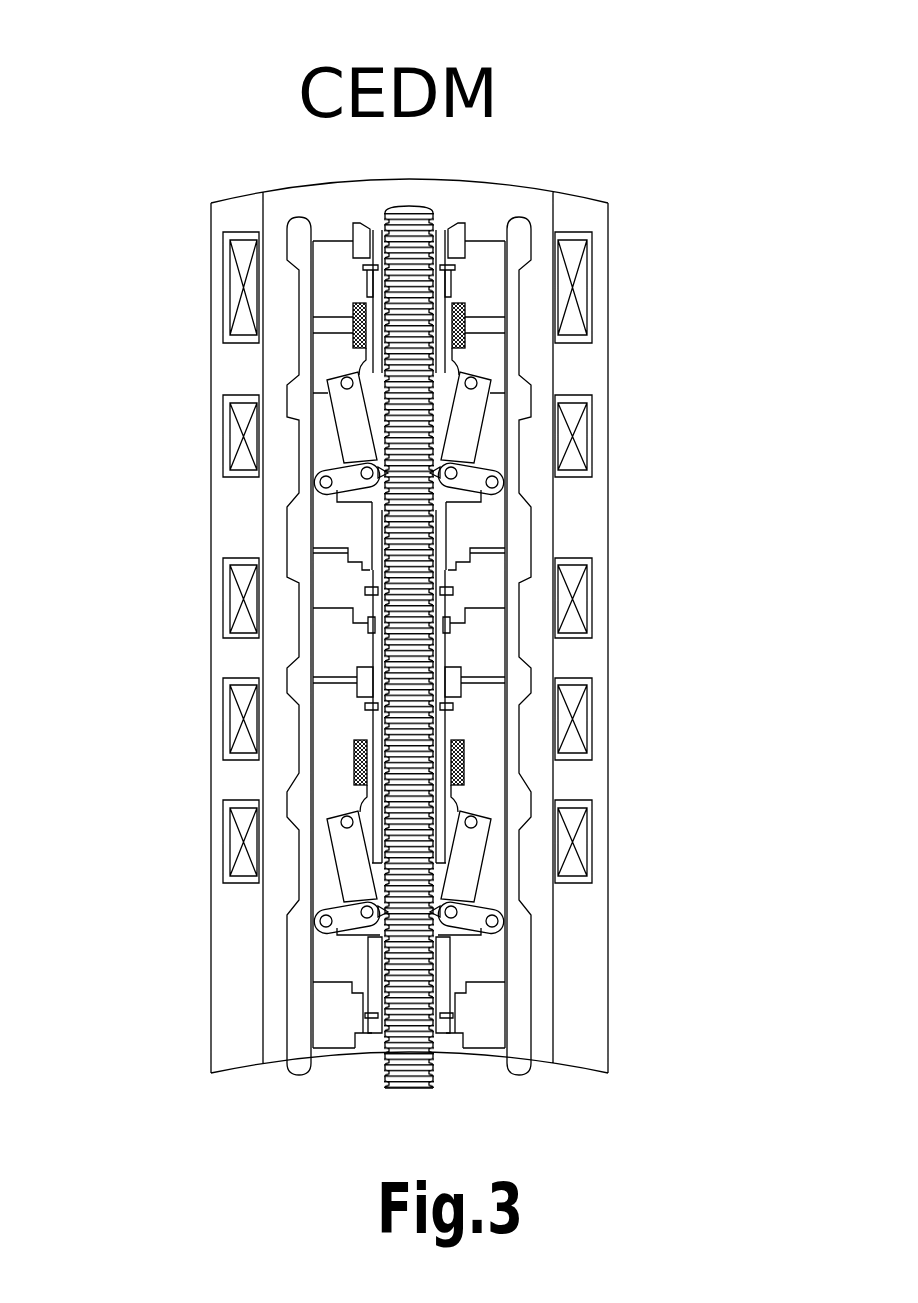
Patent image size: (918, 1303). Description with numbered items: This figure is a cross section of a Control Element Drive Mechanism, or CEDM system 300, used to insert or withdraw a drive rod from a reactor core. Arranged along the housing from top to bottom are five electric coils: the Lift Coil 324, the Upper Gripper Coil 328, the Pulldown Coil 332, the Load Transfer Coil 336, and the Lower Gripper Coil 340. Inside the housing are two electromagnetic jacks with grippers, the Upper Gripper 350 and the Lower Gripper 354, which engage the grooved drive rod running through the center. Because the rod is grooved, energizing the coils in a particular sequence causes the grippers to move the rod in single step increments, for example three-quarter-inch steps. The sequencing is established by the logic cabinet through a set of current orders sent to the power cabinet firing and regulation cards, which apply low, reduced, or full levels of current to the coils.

The CEDM system 300 is at (696, 96).
The Lift Coil 324 is at (341, 287).
The Upper Gripper Coil 328 is at (318, 436).
The Pulldown Coil 332 is at (329, 598).
The Load Transfer Coil 336 is at (322, 719).
The Lower Gripper Coil 340 is at (318, 841).
The Upper Gripper 350 is at (470, 455).
The Lower Gripper 354 is at (467, 894).